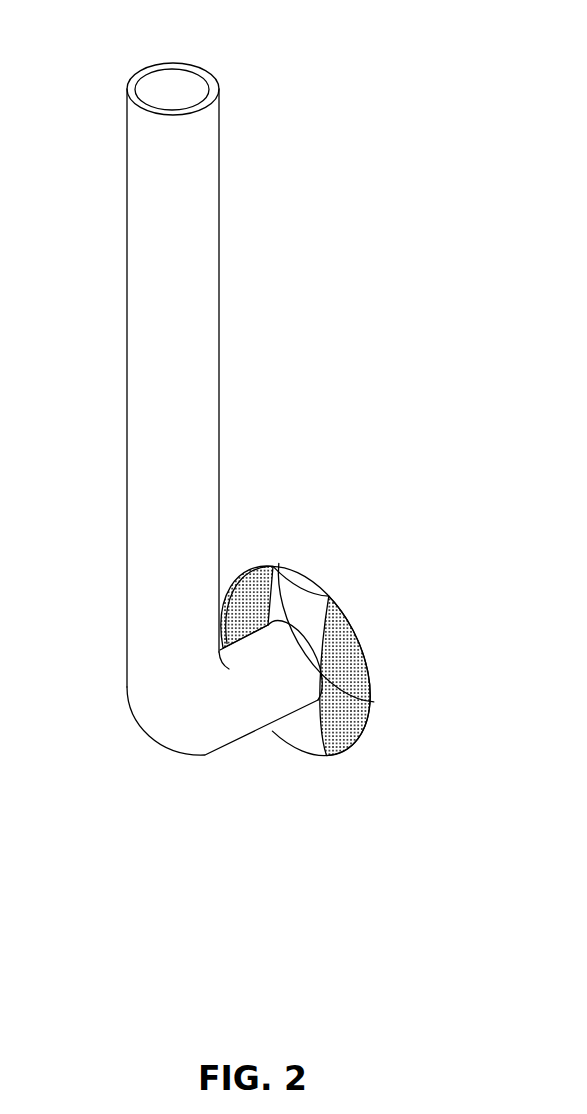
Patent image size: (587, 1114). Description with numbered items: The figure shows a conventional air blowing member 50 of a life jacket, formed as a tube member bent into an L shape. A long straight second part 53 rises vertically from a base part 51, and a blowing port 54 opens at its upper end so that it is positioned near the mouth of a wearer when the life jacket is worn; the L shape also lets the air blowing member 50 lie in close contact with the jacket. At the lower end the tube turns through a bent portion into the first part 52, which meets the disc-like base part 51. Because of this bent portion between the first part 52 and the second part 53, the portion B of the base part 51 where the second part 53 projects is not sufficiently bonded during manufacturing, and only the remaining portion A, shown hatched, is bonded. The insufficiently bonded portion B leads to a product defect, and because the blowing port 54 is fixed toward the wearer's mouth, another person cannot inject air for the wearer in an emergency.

The air blowing member 50 is at (362, 104).
The base part 51 is at (300, 737).
The first part 52 is at (215, 742).
The second part 53 is at (138, 324).
The blowing port 54 is at (167, 88).
The remaining portion A is at (250, 575).
The portion where second part projects from base part B is at (302, 585).